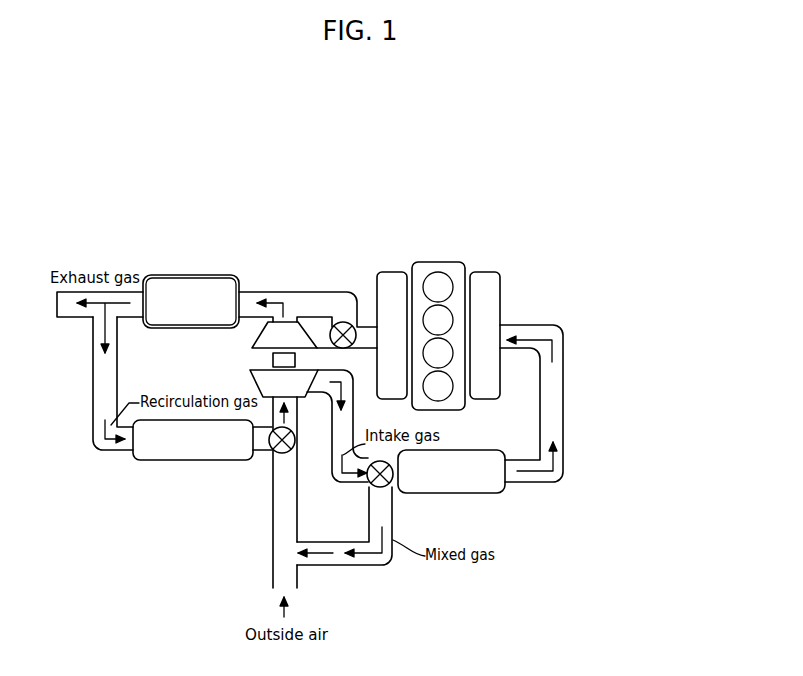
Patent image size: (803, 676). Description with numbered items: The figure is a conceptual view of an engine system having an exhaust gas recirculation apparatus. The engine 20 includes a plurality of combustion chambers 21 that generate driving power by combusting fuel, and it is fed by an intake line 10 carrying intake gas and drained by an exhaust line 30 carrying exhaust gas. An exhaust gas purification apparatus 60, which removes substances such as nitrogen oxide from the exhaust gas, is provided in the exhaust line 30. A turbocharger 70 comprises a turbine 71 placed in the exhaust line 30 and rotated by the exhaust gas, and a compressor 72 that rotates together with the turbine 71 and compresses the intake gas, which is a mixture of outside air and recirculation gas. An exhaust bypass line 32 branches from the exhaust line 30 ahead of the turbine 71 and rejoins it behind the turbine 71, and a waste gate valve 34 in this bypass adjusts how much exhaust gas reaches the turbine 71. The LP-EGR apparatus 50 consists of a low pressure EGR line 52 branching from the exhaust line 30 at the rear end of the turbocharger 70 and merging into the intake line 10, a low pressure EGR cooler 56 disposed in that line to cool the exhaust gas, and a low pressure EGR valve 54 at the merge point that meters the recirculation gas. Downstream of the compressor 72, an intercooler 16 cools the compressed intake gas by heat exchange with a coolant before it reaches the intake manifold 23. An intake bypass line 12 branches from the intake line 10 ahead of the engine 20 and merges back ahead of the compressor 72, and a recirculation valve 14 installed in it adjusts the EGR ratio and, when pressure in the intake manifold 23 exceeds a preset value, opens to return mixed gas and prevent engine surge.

The intake line 10 is at (337, 483).
The intake bypass line 12 is at (366, 566).
The recirculation valve 14 is at (386, 488).
The intercooler 16 is at (450, 494).
The engine 20 is at (489, 319).
The combustion chamber 21 is at (437, 272).
The intake manifold 23 is at (480, 272).
The exhaust line 30 is at (235, 319).
The exhaust bypass line 32 is at (319, 293).
The waste gate valve 34 is at (343, 322).
The low pressure exhaust gas recirculation apparatus 50 is at (184, 436).
The low pressure EGR line 52 is at (93, 388).
The low pressure EGR valve 54 is at (263, 472).
The low pressure EGR cooler 56 is at (182, 461).
The exhaust gas purification apparatus 60 is at (186, 275).
The turbocharger 70 is at (233, 359).
The turbine 71 is at (252, 348).
The compressor 72 is at (250, 371).